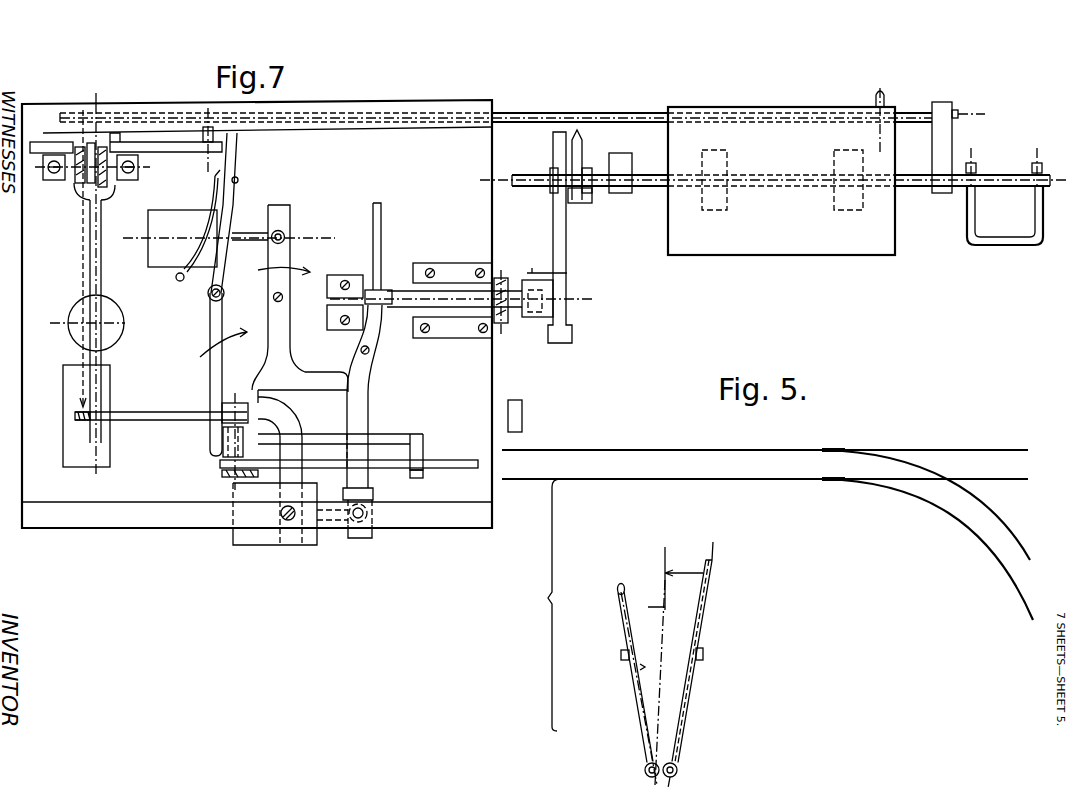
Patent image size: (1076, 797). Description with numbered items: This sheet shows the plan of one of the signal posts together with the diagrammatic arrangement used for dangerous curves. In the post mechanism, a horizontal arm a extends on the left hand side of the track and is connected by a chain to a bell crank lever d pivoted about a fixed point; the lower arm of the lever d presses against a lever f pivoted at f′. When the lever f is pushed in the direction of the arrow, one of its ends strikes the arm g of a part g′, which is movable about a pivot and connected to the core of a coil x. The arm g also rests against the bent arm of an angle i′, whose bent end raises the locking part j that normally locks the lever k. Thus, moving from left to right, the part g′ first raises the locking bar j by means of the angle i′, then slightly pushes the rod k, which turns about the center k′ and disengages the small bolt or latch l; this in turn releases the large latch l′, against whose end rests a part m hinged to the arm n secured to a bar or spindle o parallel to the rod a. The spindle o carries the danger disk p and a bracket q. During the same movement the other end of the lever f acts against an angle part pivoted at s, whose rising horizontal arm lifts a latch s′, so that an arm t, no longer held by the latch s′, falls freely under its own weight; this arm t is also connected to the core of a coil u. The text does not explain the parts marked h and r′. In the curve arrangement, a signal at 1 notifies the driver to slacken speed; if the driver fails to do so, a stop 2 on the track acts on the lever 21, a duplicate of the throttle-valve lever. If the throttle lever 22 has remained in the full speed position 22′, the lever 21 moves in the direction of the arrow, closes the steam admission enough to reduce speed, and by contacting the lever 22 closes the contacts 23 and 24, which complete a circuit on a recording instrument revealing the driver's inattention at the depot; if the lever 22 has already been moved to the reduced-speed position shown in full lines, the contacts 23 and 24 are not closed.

In FIG. 7, the horizontal arm a is at (636, 113).
In FIG. 7, the bar or spindle o is at (644, 173).
In FIG. 7, the danger disk p is at (781, 171).
In FIG. 7, the bracket q is at (976, 229).
In FIG. 7, the arm n is at (565, 256).
In FIG. 7, the part hinged to arm n m is at (545, 317).
In FIG. 7, the small bolt or latch l is at (393, 309).
In FIG. 7, the large latch l′ is at (447, 300).
In FIG. 7, the rod k is at (358, 420).
In FIG. 7, the center of rod k k′ is at (378, 348).
In FIG. 7, the locking part j is at (382, 463).
In FIG. 7, the bracket h is at (288, 538).
In FIG. 7, the arm of part g′ g is at (260, 430).
In FIG. 7, the movable part g′ is at (283, 360).
In FIG. 7, the angle i′ is at (340, 427).
In FIG. 7, the lever f is at (210, 372).
In FIG. 7, the pivot of lever f f′ is at (209, 297).
In FIG. 7, the pivot of angle part r s is at (208, 153).
In FIG. 7, the latch s′ is at (88, 180).
In FIG. 7, the plate r′ is at (184, 148).
In FIG. 7, the arm t is at (95, 257).
In FIG. 7, the coil u is at (117, 322).
In FIG. 7, the bell crank lever d is at (140, 422).
In FIG. 7, the coil x is at (168, 252).
In FIG. 7, the signal 1 is at (535, 393).
In FIG. 5, the stop 2 is at (727, 446).
In FIG. 5, the lever 21 is at (701, 631).
In FIG. 5, the lever of the throttle-valve 22 is at (640, 720).
In FIG. 5, the full speed position of lever 22 22′ is at (666, 589).
In FIG. 5, the contact 23 is at (668, 666).
In FIG. 5, the contact 24 is at (689, 660).